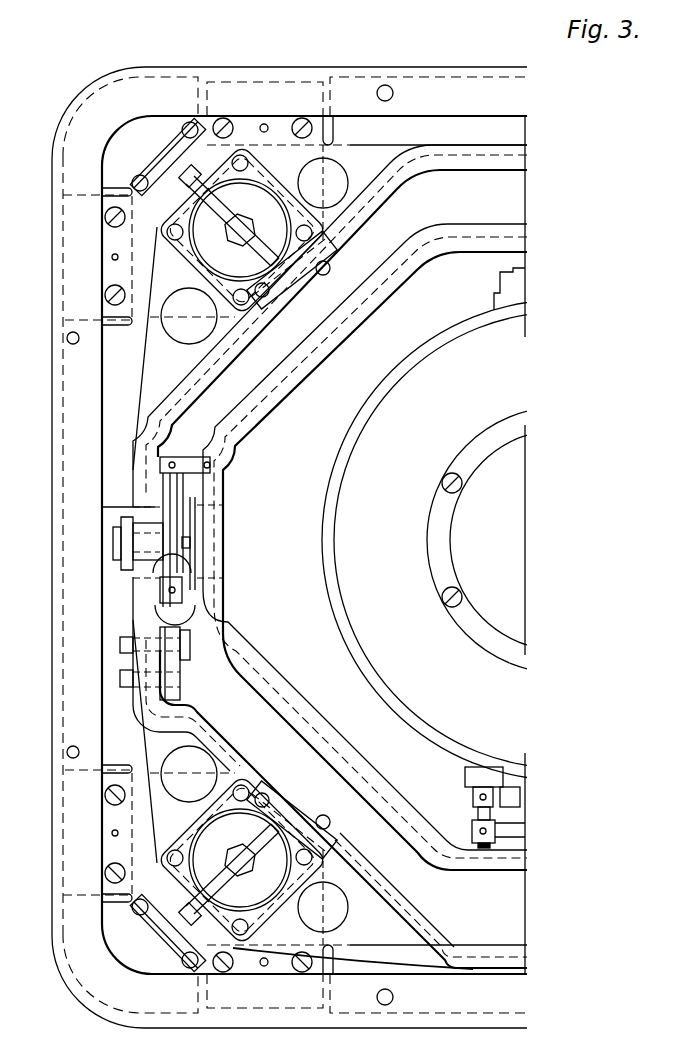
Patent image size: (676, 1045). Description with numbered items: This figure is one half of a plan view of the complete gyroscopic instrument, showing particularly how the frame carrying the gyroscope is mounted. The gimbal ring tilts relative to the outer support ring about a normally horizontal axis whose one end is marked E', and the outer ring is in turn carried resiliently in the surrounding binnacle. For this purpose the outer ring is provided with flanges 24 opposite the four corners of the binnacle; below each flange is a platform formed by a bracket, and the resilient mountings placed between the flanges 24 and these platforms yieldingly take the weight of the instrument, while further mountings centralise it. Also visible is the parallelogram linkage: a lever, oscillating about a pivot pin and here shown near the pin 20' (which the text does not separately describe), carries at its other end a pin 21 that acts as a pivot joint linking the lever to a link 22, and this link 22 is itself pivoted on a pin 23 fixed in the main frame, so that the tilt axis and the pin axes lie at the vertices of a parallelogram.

The clamping rail 20' is at (509, 852).
The pin 21 is at (483, 848).
The link 22 is at (482, 840).
The pin 23 is at (477, 812).
The flanges 24 is at (163, 387).
The end of tilt axis EE' E' is at (90, 543).